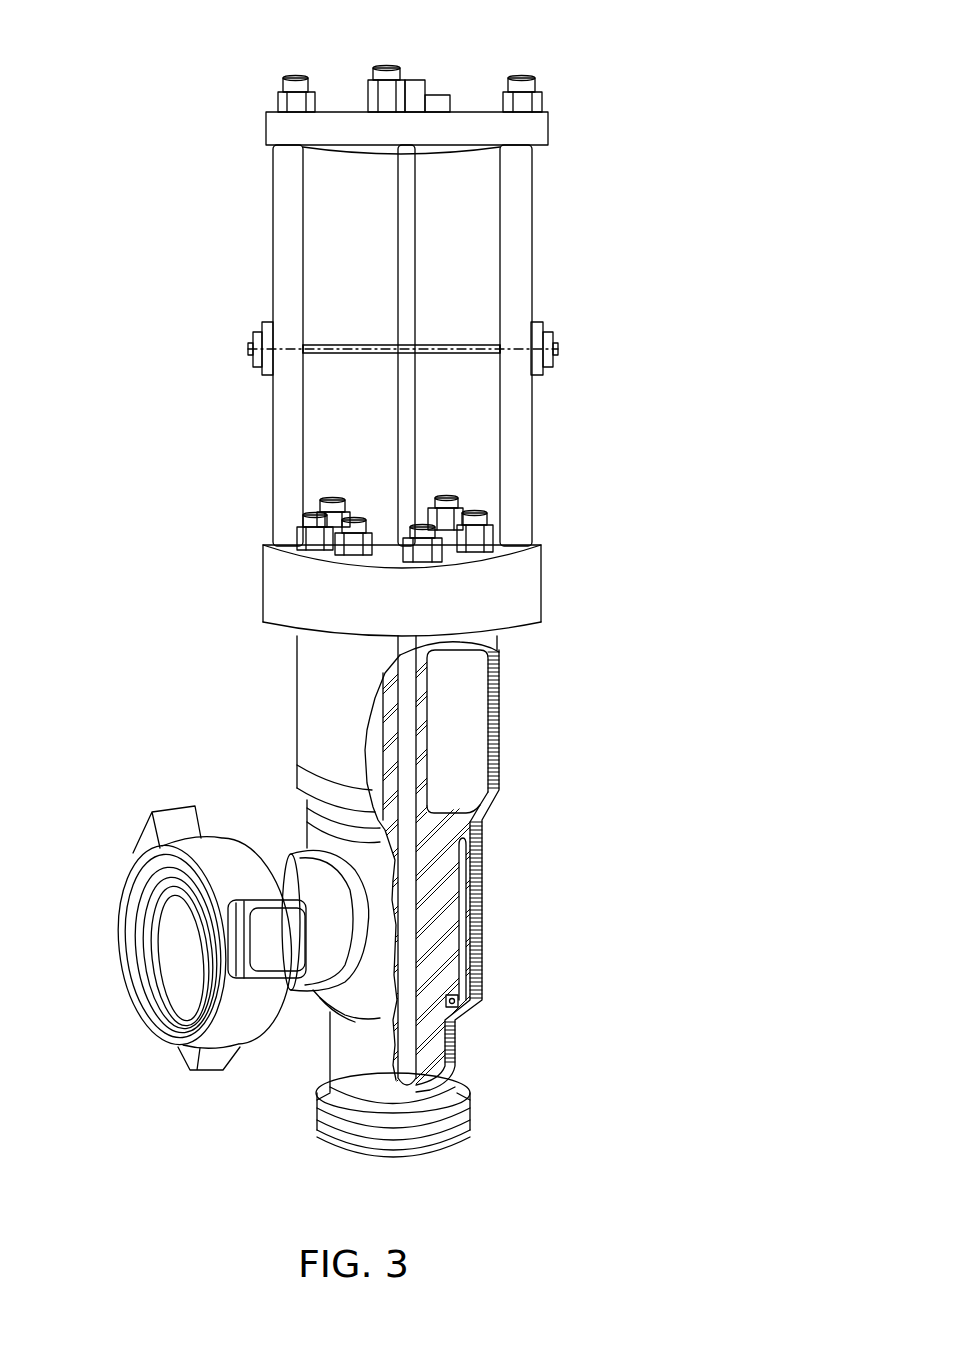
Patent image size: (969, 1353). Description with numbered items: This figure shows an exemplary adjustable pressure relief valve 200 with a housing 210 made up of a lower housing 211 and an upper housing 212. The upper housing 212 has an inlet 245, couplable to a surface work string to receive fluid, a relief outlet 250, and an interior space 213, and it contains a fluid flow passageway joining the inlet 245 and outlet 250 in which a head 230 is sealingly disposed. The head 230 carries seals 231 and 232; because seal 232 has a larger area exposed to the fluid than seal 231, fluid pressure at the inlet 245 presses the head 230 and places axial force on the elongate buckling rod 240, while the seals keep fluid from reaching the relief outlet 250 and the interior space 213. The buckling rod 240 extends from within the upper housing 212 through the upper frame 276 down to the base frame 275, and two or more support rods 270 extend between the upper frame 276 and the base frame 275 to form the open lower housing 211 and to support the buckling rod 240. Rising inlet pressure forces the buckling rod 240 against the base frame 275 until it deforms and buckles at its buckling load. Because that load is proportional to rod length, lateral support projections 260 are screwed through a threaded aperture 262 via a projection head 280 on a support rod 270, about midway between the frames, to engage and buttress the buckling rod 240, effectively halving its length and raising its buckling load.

The adjustable pressure relief valve 200 is at (594, 54).
The housing 210 is at (145, 428).
The lower housing 211 is at (236, 226).
The upper housing 212 is at (265, 700).
The interior space 213 is at (457, 705).
The head 230 is at (445, 905).
The seal 231 is at (458, 1000).
The seal 232 is at (475, 830).
The buckling rod 240 is at (415, 160).
The inlet 245 is at (128, 870).
The relief outlet 250 is at (472, 1105).
The lateral support projections 260 is at (340, 343).
The aperture 262 is at (295, 355).
The support rods 270 is at (292, 415).
The base frame 275 is at (538, 133).
The upper frame 276 is at (538, 585).
The projection head 280 is at (220, 346).